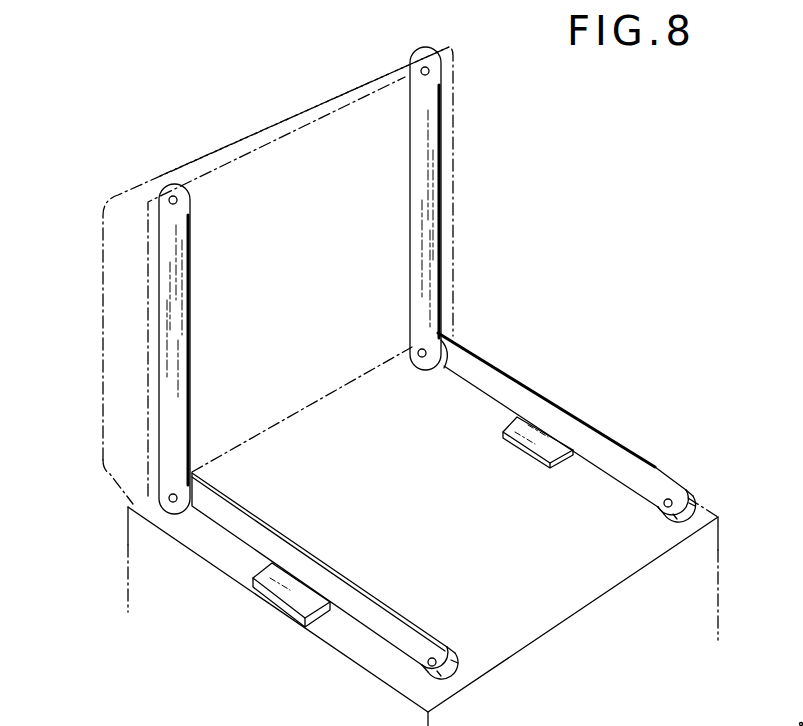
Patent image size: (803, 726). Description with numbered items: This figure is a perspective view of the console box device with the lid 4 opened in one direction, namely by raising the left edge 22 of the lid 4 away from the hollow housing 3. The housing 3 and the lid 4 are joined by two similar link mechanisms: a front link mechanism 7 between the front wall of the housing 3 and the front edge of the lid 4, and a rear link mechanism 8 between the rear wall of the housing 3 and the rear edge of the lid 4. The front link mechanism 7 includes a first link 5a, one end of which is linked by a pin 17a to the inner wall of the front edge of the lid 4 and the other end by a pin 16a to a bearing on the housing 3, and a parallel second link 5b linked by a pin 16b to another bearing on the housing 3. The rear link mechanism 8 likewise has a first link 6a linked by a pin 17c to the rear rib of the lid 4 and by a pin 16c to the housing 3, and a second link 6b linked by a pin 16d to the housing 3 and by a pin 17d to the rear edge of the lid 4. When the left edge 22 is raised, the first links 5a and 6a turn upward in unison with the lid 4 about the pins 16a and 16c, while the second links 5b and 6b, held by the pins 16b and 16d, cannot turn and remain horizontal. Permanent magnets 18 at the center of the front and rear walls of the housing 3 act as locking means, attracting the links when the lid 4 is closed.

The housing 3 is at (702, 578).
The lid 4 is at (278, 272).
The left edge 22 is at (322, 95).
The first link 5a is at (170, 395).
The second link 5b is at (247, 532).
The front link mechanism 7 is at (235, 431).
The first link 6a is at (432, 233).
The second link 6b is at (567, 418).
The rear link mechanism 8 is at (553, 284).
The pin 16a is at (188, 503).
The pin 16b is at (428, 668).
The pin 16c is at (417, 360).
The pin 16d is at (665, 507).
The pin 17a is at (170, 195).
The pin 17c is at (421, 66).
The pin 17d is at (800, 722).
The permanent magnet 18 is at (288, 588).